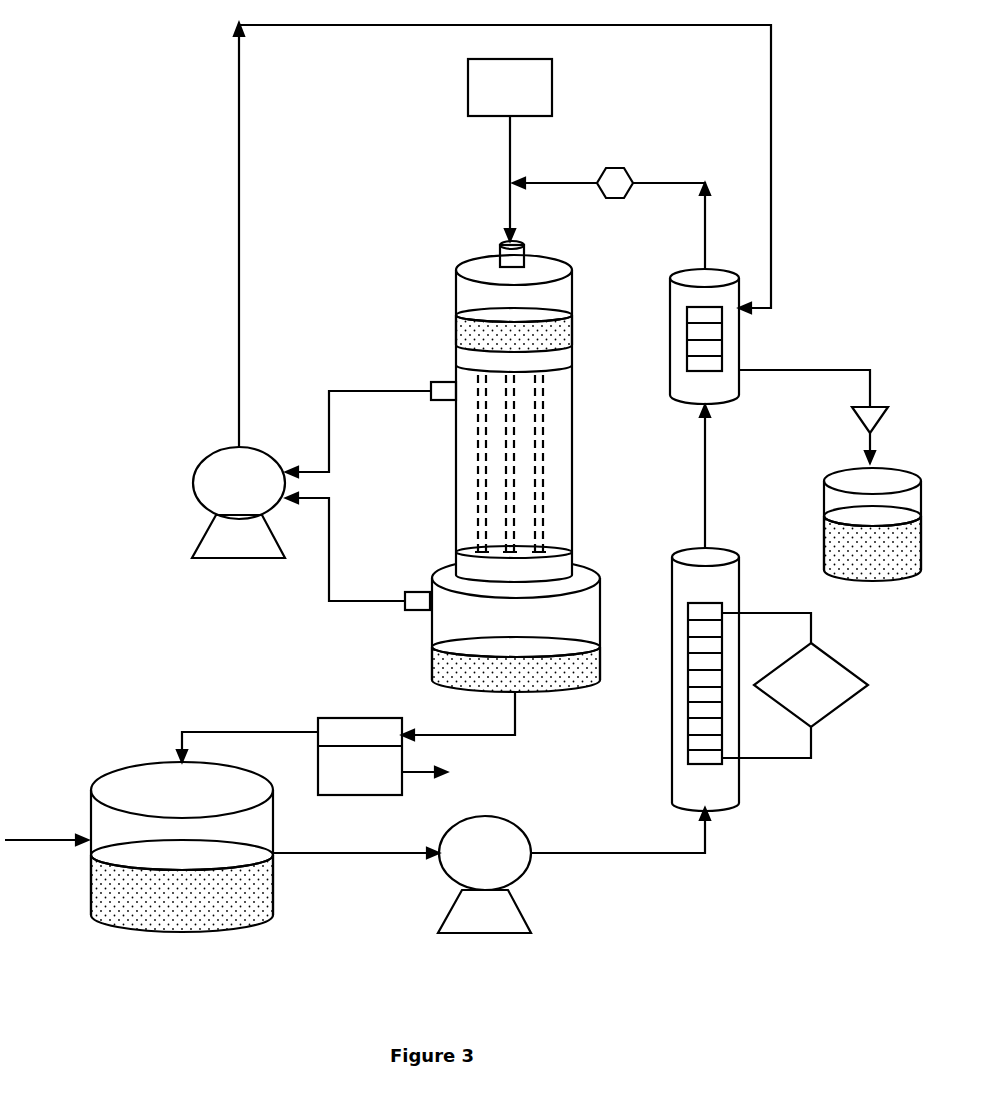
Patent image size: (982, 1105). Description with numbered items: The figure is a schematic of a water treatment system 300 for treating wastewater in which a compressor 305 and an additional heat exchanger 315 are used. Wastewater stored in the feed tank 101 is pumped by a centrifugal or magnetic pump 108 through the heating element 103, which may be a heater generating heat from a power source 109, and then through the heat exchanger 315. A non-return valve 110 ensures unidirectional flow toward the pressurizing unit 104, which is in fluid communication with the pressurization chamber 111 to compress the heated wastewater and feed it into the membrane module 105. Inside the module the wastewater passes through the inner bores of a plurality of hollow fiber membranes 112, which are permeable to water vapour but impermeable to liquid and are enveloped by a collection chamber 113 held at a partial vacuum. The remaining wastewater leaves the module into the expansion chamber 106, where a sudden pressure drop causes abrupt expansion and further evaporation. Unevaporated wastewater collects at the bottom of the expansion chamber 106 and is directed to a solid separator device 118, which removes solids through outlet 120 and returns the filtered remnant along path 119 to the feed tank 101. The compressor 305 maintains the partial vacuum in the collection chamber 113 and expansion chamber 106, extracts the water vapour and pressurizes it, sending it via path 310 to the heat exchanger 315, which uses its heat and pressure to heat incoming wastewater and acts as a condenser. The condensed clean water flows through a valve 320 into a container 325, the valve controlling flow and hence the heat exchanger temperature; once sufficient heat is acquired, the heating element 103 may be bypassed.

The system 300 is at (134, 84).
The path 310 is at (502, 224).
The pressurizing unit 104 is at (527, 98).
The non-return valve 110 is at (597, 170).
The membrane module 105 is at (456, 431).
The pressurization chamber 111 is at (492, 298).
The collection chamber 113 is at (470, 472).
The hollow fiber membrane 112 is at (508, 522).
The expansion chamber 106 is at (455, 622).
The compressor 305 is at (256, 495).
The heat exchanger 315 is at (663, 290).
The valve 320 is at (852, 424).
The container 325 is at (815, 520).
The heating element 103 is at (663, 541).
The power source 109 is at (828, 696).
The feed tank 101 is at (127, 790).
The path 119 is at (247, 734).
The solid separator device 118 is at (377, 784).
The outlet 120 is at (444, 773).
The pump 108 is at (502, 865).